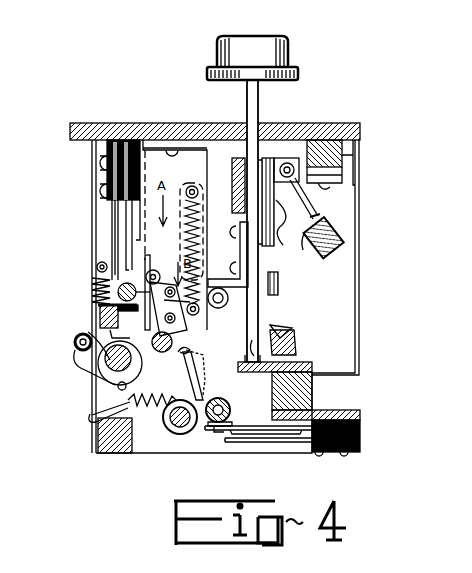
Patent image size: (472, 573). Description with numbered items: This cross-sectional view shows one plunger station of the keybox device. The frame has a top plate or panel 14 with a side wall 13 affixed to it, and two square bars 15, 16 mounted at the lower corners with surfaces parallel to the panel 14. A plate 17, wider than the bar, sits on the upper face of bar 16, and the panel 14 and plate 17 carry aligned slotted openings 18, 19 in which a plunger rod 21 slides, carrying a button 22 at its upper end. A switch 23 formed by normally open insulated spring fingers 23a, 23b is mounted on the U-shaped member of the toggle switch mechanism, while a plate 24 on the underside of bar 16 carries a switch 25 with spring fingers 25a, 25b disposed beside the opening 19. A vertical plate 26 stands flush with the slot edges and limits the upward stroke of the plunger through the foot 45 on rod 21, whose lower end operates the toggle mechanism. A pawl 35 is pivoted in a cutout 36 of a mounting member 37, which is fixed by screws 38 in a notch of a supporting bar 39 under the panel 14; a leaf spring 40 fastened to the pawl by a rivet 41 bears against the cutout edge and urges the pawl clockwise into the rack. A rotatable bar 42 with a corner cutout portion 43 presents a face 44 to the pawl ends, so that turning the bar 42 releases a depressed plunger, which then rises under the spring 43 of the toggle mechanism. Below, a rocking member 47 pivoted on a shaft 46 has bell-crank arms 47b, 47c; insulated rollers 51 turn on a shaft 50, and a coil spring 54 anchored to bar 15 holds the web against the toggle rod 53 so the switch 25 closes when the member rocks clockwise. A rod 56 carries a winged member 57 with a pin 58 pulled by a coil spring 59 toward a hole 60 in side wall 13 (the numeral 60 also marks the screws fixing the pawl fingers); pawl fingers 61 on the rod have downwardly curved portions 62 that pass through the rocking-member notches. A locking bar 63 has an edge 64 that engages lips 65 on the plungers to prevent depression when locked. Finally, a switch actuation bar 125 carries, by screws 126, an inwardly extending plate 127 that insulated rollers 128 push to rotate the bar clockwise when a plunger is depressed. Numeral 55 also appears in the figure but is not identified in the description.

The side wall 13 is at (359, 270).
The top plate or panel 14 is at (128, 123).
The square bar 15 is at (116, 453).
The square bar 16 is at (312, 392).
The plate 17 is at (306, 364).
The slotted opening 18 is at (259, 120).
The slotted opening 19 is at (249, 358).
The plunger rod 21 is at (268, 298).
The button 22 is at (262, 36).
The switch 23 is at (107, 205).
The spring finger 23a is at (116, 226).
The spring finger 23b is at (124, 246).
The plate 24 is at (360, 414).
The switch 25 is at (368, 440).
The spring finger 25a is at (262, 422).
The spring finger 25b is at (275, 442).
The vertical plate 26 is at (232, 160).
The pawl 35 is at (286, 225).
The cutout 36 is at (286, 162).
The mounting member 37 is at (344, 172).
The screw 38 is at (331, 186).
The supporting bar 39 is at (344, 152).
The leaf spring 40 is at (305, 196).
The rivet 41 is at (318, 214).
The cooperative bar 42 is at (346, 240).
The corner cutout portion 43 is at (200, 205).
The face 44 is at (303, 252).
The foot 45 is at (238, 250).
The shaft 46 is at (214, 432).
The rocking member 47 is at (170, 426).
The arm 47b is at (190, 362).
The arm 47c is at (203, 398).
The shaft 50 is at (221, 400).
The insulated roller 51 is at (228, 410).
The rod 53 is at (153, 340).
The coil spring 54 is at (136, 404).
The latch lever 55 is at (168, 303).
The rod 56 is at (100, 378).
The winged member 57 is at (88, 368).
The pin 58 is at (75, 343).
The coil spring 59 is at (92, 290).
The hole 60 is at (97, 268).
The pawl finger 61 is at (147, 396).
The downwardly curved portion 62 is at (190, 350).
The locking bar 63 is at (296, 340).
The edge 64 is at (288, 326).
The lip 65 is at (256, 340).
The switch actuation bar 125 is at (125, 335).
The screw 126 is at (100, 312).
The inwardly extending plate 127 is at (131, 316).
The insulated roller 128 is at (150, 278).